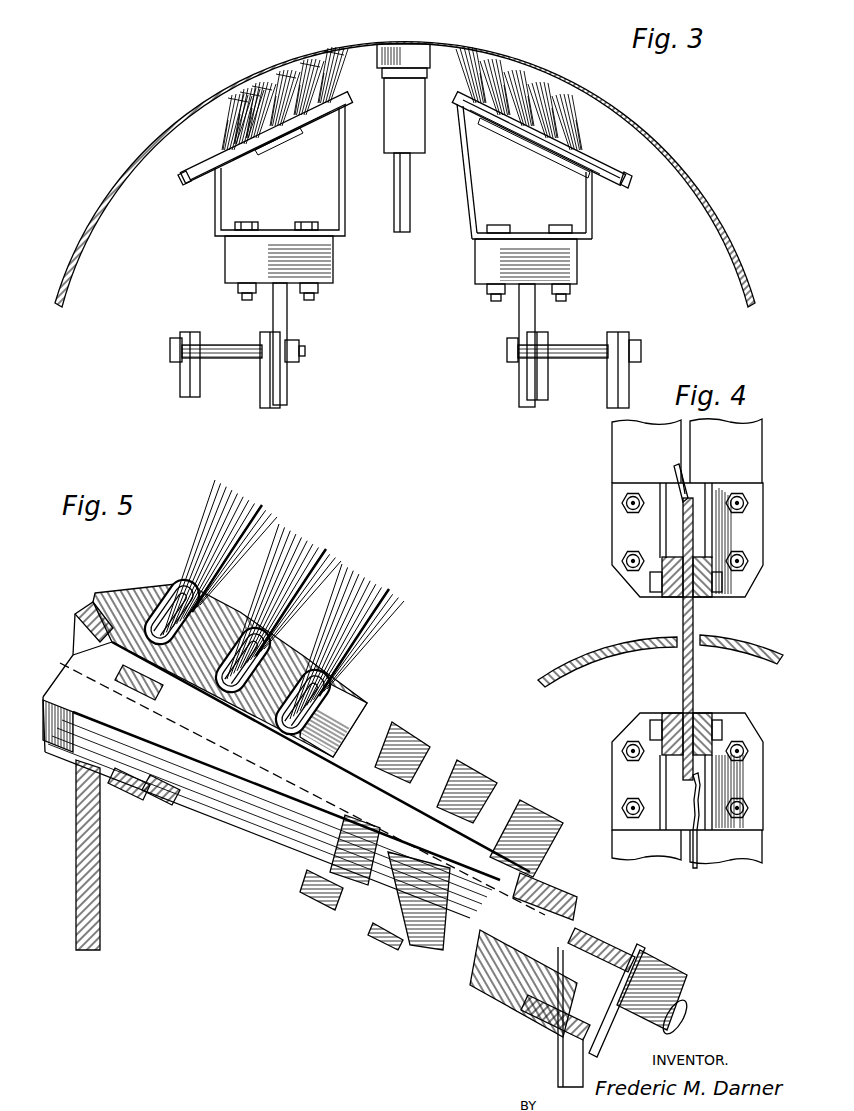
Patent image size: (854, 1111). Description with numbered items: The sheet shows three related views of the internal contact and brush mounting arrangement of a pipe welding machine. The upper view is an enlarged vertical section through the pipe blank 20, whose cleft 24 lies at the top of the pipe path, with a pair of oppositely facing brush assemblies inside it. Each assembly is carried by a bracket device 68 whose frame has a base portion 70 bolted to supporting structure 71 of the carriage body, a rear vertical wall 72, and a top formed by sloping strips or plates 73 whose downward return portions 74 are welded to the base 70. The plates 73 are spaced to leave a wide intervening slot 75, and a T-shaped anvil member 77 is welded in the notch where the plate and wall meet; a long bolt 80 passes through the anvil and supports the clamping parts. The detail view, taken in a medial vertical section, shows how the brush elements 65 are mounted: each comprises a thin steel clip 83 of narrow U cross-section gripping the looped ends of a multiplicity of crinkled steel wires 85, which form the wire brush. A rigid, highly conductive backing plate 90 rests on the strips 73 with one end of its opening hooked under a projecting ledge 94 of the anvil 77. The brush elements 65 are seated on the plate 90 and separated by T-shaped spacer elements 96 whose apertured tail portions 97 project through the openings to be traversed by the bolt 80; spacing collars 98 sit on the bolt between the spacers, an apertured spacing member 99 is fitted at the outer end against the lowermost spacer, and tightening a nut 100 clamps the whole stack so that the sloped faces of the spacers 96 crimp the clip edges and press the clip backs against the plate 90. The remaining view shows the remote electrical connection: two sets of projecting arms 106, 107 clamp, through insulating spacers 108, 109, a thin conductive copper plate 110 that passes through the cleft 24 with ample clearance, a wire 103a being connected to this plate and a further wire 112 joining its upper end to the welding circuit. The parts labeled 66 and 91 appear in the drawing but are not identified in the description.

In FIG. 4, the pipe blank 20 is at (772, 652).
In FIG. 4, the cleft 24 is at (679, 643).
In FIG. 3, the brush element 65 is at (318, 68).
In FIG. 3, the bristle tuft 66 is at (232, 98).
In FIG. 3, the bracket device 68 is at (208, 218).
In FIG. 3, the base portion 70 is at (527, 234).
In FIG. 3, the supporting structure 71 is at (228, 255).
In FIG. 3, the rear vertical wall 72 is at (468, 205).
In FIG. 5, the sloping strips 73 is at (380, 882).
In FIG. 3, the downward return portions 74 is at (595, 222).
In FIG. 3, the intervening slot 75 is at (538, 162).
In FIG. 5, the T-shaped anvil member 77 is at (145, 597).
In FIG. 5, the long bolt 80 is at (175, 800).
In FIG. 5, the steel clip 83 is at (275, 650).
In FIG. 5, the steel wires 85 is at (212, 512).
In FIG. 5, the backing plate 90 is at (77, 614).
In FIG. 5, the clamp plate 91 is at (96, 593).
In FIG. 3, the projecting ledge 94 is at (340, 98).
In FIG. 5, the T-shaped spacer element 96 is at (228, 618).
In FIG. 3, the apertured tail portion 97 is at (266, 160).
In FIG. 5, the apertured tail portion 97 is at (118, 790).
In FIG. 3, the spacing collar 98 is at (280, 150).
In FIG. 5, the spacing collar 98 is at (220, 813).
In FIG. 3, the apertured spacing member 99 is at (205, 170).
In FIG. 5, the apertured spacing member 99 is at (595, 940).
In FIG. 5, the nut 100 is at (655, 966).
In FIG. 4, the wire 103a is at (695, 872).
In FIG. 4, the projecting arms 106 is at (662, 560).
In FIG. 4, the projecting arms 107 is at (662, 716).
In FIG. 4, the insulating spacer 108 is at (672, 598).
In FIG. 4, the insulating spacer 109 is at (675, 712).
In FIG. 4, the conductive plate 110 is at (694, 667).
In FIG. 4, the wire 112 is at (674, 472).